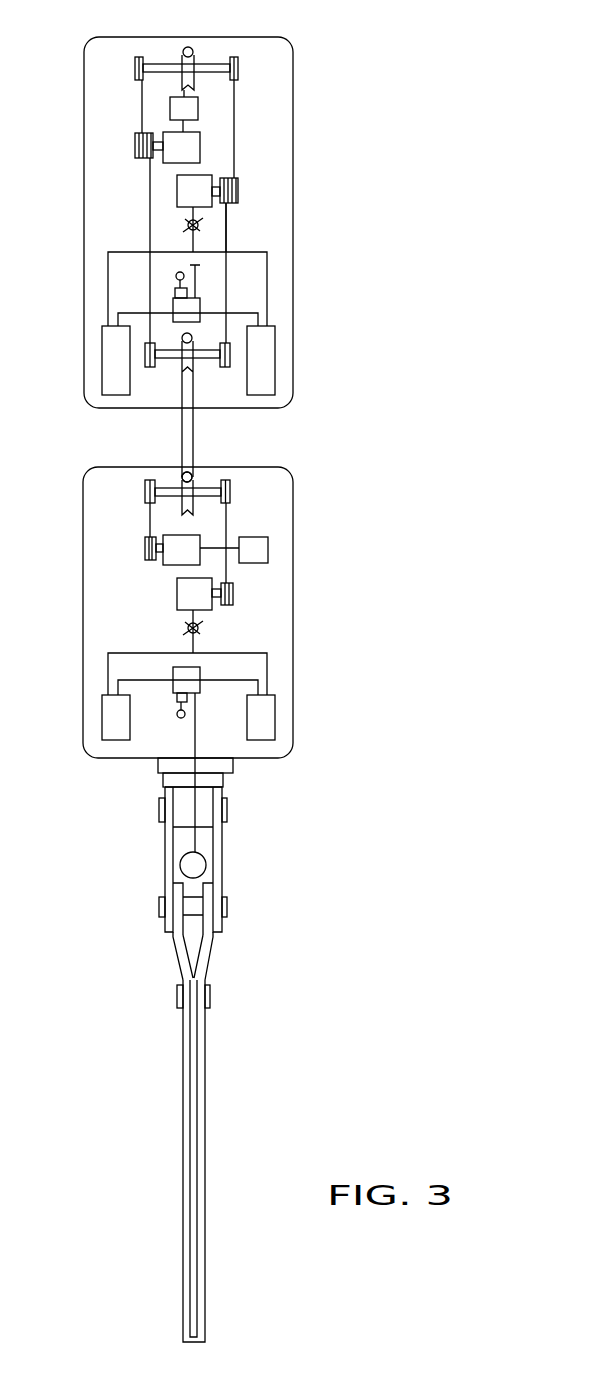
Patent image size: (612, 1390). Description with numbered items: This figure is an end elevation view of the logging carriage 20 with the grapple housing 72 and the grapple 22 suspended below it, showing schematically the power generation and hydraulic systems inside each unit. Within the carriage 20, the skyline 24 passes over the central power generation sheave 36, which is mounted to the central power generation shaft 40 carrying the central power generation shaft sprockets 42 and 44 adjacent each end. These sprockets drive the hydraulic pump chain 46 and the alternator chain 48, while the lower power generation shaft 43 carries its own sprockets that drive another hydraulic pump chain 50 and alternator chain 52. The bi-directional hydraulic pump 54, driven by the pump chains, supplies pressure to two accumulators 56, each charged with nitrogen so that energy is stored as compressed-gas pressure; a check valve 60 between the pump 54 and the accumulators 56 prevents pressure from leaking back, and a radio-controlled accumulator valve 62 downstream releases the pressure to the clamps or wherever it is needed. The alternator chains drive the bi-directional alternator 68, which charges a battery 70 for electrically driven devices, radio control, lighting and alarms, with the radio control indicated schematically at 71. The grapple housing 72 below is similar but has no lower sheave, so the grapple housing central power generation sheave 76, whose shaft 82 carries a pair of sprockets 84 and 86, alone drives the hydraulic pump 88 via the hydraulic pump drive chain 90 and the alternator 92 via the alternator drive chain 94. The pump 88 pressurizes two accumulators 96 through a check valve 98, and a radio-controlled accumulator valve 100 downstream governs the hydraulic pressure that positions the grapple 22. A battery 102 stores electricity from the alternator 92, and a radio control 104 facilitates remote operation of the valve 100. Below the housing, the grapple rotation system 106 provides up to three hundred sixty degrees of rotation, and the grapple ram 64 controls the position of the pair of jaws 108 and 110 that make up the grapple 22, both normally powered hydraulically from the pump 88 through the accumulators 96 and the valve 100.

The carriage 20 is at (299, 191).
The grapple 22 is at (210, 1040).
The skyline 24 is at (190, 48).
The central power generation sheave 36 is at (196, 63).
The central power generation shaft 40 is at (167, 63).
The central power generation shaft sprocket 42 is at (238, 70).
The lower power generation shaft 43 is at (168, 347).
The central power generation shaft sprocket 44 is at (135, 71).
The hydraulic pump chain 46 is at (234, 115).
The alternator chain 48 is at (142, 105).
The hydraulic pump chain 50 is at (226, 232).
The alternator chain 52 is at (150, 240).
The bi-directional hydraulic pump 54 is at (177, 190).
The accumulator 56 is at (102, 353).
The check valve 60 is at (188, 222).
The radio-controlled accumulator valve 62 is at (200, 309).
The grapple ram 64 is at (180, 865).
The bi-directional alternator 68 is at (200, 148).
The battery 70 is at (198, 108).
The radio control 71 is at (175, 292).
The grapple housing 72 is at (299, 598).
The grapple housing central power generation sheave 76 is at (181, 482).
The shaft 82 is at (203, 488).
The sprocket 84 is at (231, 492).
The sprocket 86 is at (145, 492).
The hydraulic pump 88 is at (177, 590).
The hydraulic pump drive chain 90 is at (226, 520).
The alternator 92 is at (175, 563).
The alternator drive chain 94 is at (150, 518).
The accumulator 96 is at (102, 712).
The check valve 98 is at (198, 626).
The radio-controlled accumulator valve 100 is at (173, 670).
The battery 102 is at (268, 550).
The radio control 104 is at (178, 698).
The grapple rotation system 106 is at (158, 766).
The jaw 108 is at (183, 1102).
The jaw 110 is at (203, 1113).